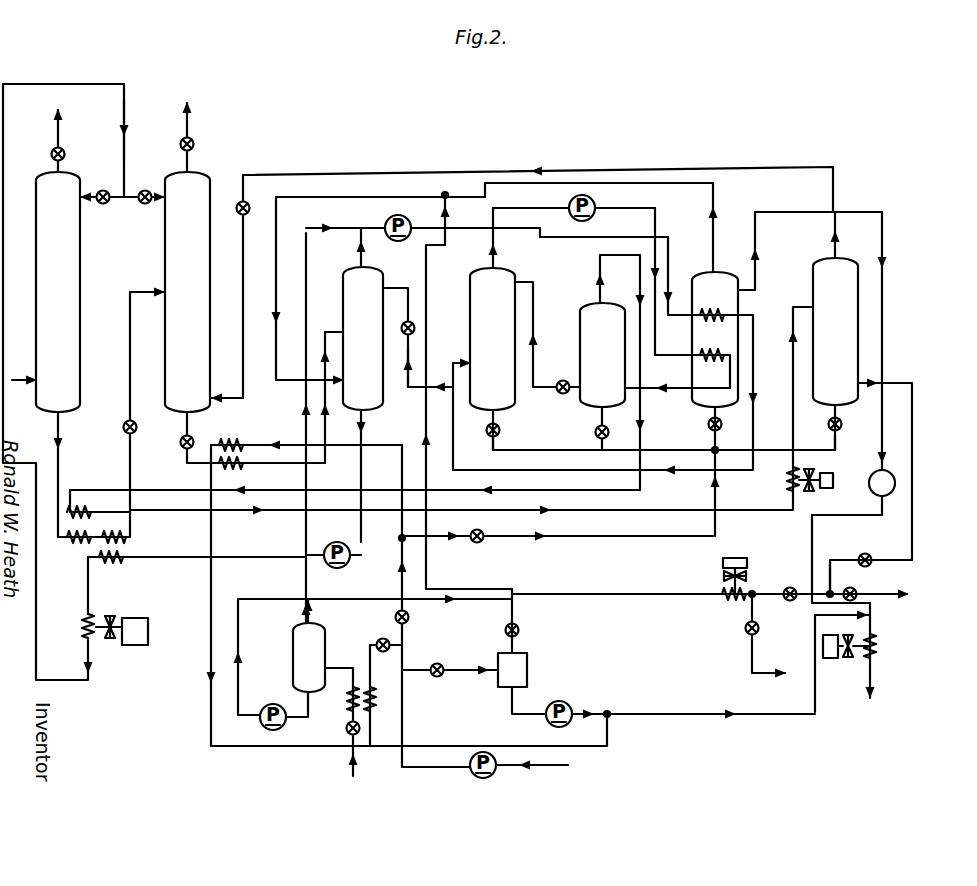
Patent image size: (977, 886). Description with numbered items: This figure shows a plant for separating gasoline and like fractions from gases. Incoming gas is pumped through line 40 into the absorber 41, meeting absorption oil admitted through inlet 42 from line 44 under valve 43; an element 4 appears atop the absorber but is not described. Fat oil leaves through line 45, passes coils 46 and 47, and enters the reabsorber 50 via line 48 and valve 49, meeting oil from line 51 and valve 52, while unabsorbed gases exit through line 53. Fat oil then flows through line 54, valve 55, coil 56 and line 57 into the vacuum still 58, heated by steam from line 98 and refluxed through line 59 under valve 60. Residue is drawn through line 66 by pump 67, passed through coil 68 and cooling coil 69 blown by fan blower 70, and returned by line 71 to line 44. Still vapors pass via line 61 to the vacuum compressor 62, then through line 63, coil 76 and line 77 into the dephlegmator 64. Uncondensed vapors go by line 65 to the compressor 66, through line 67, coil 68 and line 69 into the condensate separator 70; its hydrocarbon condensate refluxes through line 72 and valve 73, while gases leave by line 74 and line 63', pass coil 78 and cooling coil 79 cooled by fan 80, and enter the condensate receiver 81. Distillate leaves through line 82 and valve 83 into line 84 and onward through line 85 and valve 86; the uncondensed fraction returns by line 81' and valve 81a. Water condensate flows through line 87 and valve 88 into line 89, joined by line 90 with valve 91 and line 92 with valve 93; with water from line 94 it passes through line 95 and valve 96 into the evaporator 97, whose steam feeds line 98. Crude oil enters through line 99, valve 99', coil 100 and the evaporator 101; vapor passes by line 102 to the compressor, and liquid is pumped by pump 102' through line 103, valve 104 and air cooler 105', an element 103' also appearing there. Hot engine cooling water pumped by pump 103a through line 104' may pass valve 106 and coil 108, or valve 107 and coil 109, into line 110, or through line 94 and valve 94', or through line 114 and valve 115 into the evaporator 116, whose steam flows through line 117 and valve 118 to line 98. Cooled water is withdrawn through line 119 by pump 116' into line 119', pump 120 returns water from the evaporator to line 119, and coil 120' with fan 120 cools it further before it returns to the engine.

The valve 4 is at (65, 160).
The line 40 is at (25, 378).
The absorber 41 is at (58, 292).
The inlet line 42 is at (95, 201).
The valve 43 is at (108, 187).
The line 44 is at (124, 110).
The line 45 is at (56, 434).
The heat exchange coil 46 is at (78, 547).
The heat exchange coil 47 is at (122, 546).
The line 48 is at (130, 372).
The valve 49 is at (125, 432).
The reabsorber 50 is at (187, 292).
The line 51 is at (154, 201).
The valve 52 is at (150, 191).
The line 53 is at (192, 128).
The line 54 is at (186, 434).
The valve 55 is at (195, 445).
The heat exchange coil 56 is at (242, 466).
The line 57 is at (326, 332).
The vacuum still 58 is at (363, 338).
The reflux line 59 is at (408, 357).
The valve 60 is at (408, 321).
The line 61 is at (360, 255).
The vacuum compressor 62 is at (388, 217).
The line 63 is at (473, 238).
The line 63' is at (355, 479).
The dephlegmator 64 is at (492, 339).
The line 65 is at (548, 214).
The compressor 66 is at (596, 209).
The pump 67 is at (338, 541).
The heat exchange coil 68 is at (118, 565).
The cooling coil 69 is at (83, 628).
The fan blower 70 is at (112, 616).
The line 71 is at (80, 84).
The line 72 is at (534, 295).
The control valve 73 is at (563, 380).
The line 74 is at (600, 262).
The heat exchange coil 76 is at (704, 320).
The line 77 is at (754, 371).
The heat exchange coil 78 is at (88, 506).
The cooling coil 79 is at (789, 484).
The fan 80 is at (822, 473).
The condensate receiver 81 is at (835, 308).
The line 81' is at (564, 176).
The valve 81a is at (238, 204).
The line 82 is at (914, 428).
The valve 83 is at (866, 554).
The line 84 is at (829, 575).
The line 85 is at (908, 600).
The valve 86 is at (857, 588).
The line 87 is at (490, 443).
The valve 88 is at (498, 430).
The line 89 is at (541, 452).
The line 90 is at (603, 427).
The valve 91 is at (596, 436).
The line 92 is at (836, 443).
The valve 93 is at (829, 424).
The line 94 is at (556, 509).
The valve 94' is at (500, 526).
The line 95 is at (712, 448).
The valve 96 is at (708, 424).
The evaporator 97 is at (715, 339).
The line 98 is at (288, 200).
The line 99 is at (328, 762).
The valve 99' is at (305, 752).
The heat exchange coil 100 is at (350, 708).
The evaporator 101 is at (314, 645).
The line 102 is at (277, 428).
The pump 102' is at (277, 702).
The line 103 is at (373, 655).
The control valve 103' is at (716, 589).
The pump 103a is at (499, 757).
The valve 104 is at (672, 579).
The line 104' is at (437, 606).
The air cooler 105' is at (744, 634).
The valve 106 is at (380, 644).
The valve 107 is at (410, 617).
The heat exchange coil 108 is at (368, 685).
The heat exchange coil 109 is at (241, 440).
The line 110 is at (211, 612).
The line 114 is at (460, 669).
The valve 115 is at (445, 658).
The evaporator 116 is at (518, 670).
The pump 116' is at (564, 702).
The line 117 is at (427, 294).
The valve 118 is at (519, 632).
The line 119 is at (754, 465).
The line 119' is at (834, 445).
The pump 120 is at (859, 577).
The cooling coil 120' is at (876, 646).